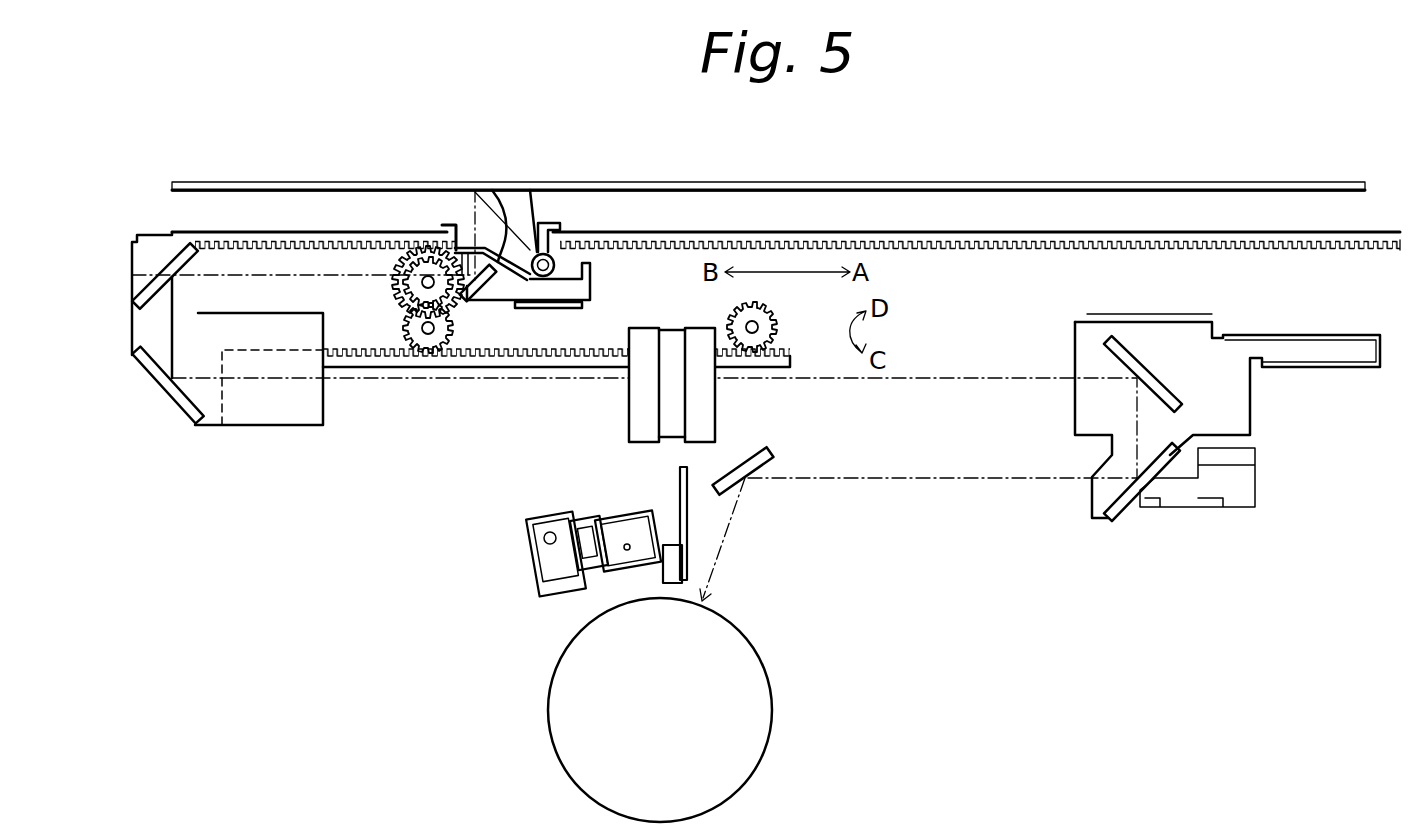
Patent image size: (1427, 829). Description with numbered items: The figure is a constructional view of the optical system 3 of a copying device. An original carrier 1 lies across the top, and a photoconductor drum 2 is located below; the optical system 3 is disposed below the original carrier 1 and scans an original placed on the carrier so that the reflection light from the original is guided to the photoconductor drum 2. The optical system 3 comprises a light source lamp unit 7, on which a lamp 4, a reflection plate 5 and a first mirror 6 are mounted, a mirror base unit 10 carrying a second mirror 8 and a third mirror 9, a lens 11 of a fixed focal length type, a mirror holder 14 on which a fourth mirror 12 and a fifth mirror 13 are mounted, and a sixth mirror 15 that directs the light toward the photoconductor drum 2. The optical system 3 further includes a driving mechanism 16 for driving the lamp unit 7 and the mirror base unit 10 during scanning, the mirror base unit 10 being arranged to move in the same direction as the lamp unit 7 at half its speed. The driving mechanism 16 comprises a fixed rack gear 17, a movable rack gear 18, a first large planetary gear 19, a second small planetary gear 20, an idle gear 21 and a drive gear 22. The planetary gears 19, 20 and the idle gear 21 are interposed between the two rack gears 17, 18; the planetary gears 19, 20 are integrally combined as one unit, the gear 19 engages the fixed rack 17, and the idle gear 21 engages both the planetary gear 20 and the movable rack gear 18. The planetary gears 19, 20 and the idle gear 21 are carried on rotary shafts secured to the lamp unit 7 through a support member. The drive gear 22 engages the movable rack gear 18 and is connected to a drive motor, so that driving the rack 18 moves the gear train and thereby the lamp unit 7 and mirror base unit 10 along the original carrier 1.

The original carrier 1 is at (325, 182).
The photoconductor drum 2 is at (757, 716).
The optical system 3 is at (181, 456).
The lamp 4 is at (540, 254).
The reflection plate 5 is at (557, 223).
The first mirror 6 is at (503, 222).
The light source lamp unit 7 is at (604, 287).
The second mirror 8 is at (148, 283).
The third mirror 9 is at (160, 380).
The mirror base unit 10 is at (125, 341).
The lens 11 is at (617, 417).
The fourth mirror 12 is at (1125, 347).
The fifth mirror 13 is at (1118, 522).
The mirror holder 14 is at (1260, 413).
The sixth mirror 15 is at (772, 452).
The driving mechanism 16 is at (804, 212).
The fixed rack gear 17 is at (703, 232).
The movable rack gear 18 is at (427, 368).
The first large planetary gear 19 is at (400, 300).
The second small planetary gear 20 is at (410, 303).
The idle gear 21 is at (448, 331).
The drive gear 22 is at (772, 333).